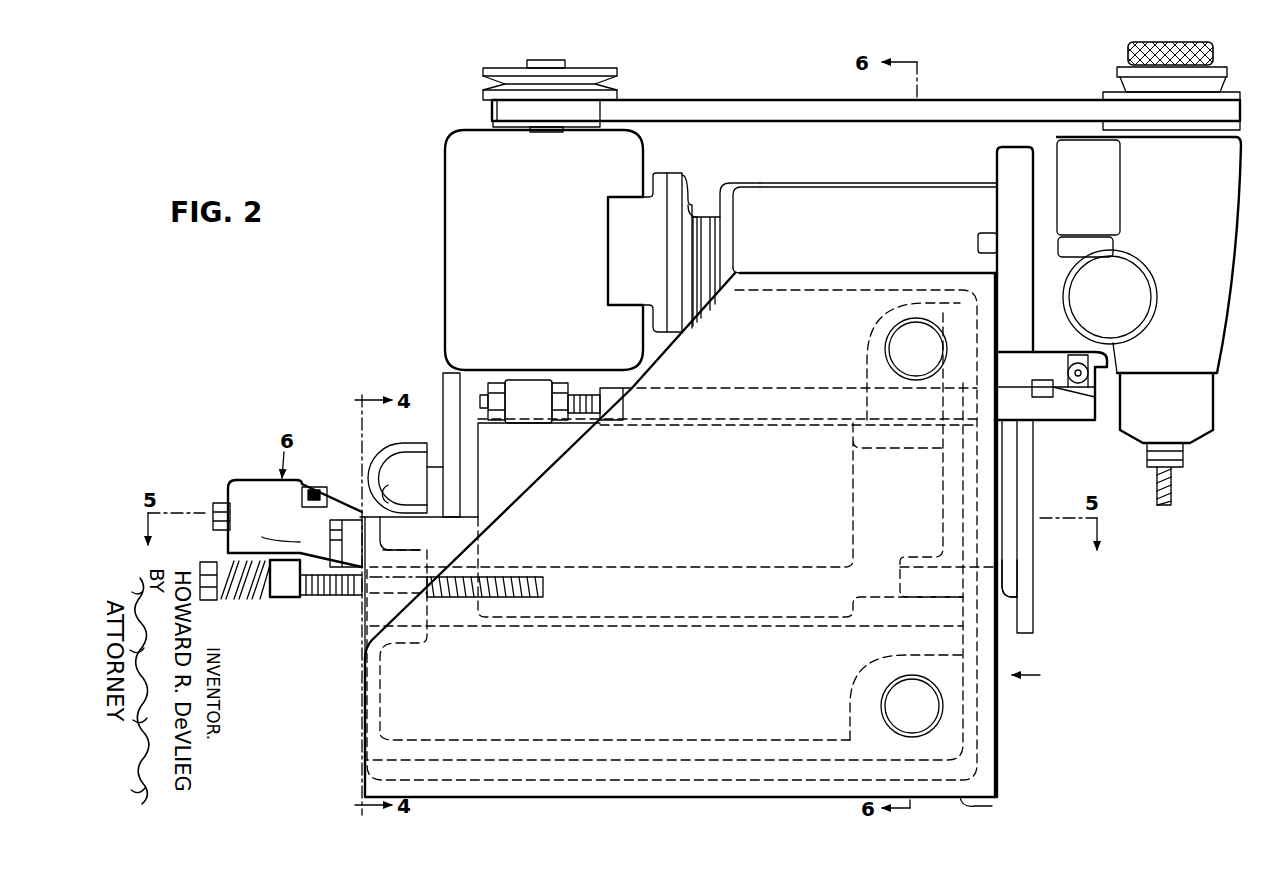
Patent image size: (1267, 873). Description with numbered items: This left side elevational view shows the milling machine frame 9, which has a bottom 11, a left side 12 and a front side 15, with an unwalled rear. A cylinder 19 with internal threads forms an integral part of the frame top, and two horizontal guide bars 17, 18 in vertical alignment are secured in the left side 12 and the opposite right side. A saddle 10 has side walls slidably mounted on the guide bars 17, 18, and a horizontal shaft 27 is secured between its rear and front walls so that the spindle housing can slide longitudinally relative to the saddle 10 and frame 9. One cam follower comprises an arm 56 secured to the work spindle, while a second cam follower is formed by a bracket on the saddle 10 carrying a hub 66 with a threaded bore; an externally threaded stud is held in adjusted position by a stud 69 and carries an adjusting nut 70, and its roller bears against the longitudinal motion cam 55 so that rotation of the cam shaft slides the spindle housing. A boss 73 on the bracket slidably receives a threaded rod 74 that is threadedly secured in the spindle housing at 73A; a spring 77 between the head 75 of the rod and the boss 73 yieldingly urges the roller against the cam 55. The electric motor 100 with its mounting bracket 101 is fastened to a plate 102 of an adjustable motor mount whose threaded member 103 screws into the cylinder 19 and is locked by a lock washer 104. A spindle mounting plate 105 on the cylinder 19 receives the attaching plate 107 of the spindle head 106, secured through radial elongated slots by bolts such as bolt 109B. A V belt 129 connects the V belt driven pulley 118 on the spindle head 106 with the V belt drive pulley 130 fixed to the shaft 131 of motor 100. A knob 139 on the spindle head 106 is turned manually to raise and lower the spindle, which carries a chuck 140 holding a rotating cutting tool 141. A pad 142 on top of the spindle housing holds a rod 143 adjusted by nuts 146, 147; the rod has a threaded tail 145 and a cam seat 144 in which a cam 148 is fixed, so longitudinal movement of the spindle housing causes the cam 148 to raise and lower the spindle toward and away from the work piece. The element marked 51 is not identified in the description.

The frame 9 is at (1036, 674).
The saddle 10 is at (356, 680).
The bottom 11 is at (985, 802).
The left side 12 is at (680, 723).
The front side 15 is at (998, 722).
The horizontal guide bar 17 is at (900, 705).
The horizontal guide bar 18 is at (903, 355).
The cylinder 19 is at (866, 186).
The horizontal shaft 27 is at (730, 572).
The column bar 51 is at (1028, 602).
The longitudinal motion cam 55 is at (393, 446).
The arm 56 is at (448, 394).
The hub 66 is at (238, 480).
The stud 69 is at (218, 505).
The adjusting nut 70 is at (316, 488).
The boss 73 is at (296, 595).
The threaded connection 73A is at (517, 576).
The threaded rod 74 is at (350, 597).
The head 75 is at (222, 601).
The spring 77 is at (268, 601).
The electric motor 100 is at (552, 171).
The mounting bracket 101 is at (658, 173).
The plate 102 is at (688, 176).
The threaded member 103 is at (703, 215).
The lock washer 104 is at (737, 186).
The spindle mounting plate 105 is at (1004, 162).
The spindle head 106 is at (1170, 177).
The attaching plate 107 is at (1053, 193).
The bolt 109B is at (976, 243).
The V belt driven pulley 118 is at (1220, 78).
The V belt 129 is at (1045, 100).
The V belt drive pulley 130 is at (595, 70).
The shaft 131 is at (546, 60).
The knob 139 is at (1093, 286).
The chuck 140 is at (1185, 455).
The rotating cutting tool 141 is at (1173, 490).
The pad 142 is at (513, 409).
The rod 143 is at (1056, 421).
The cam seat 144 is at (1093, 400).
The threaded tail 145 is at (588, 390).
The nut 146 is at (560, 382).
The nut 147 is at (493, 384).
The cam 148 is at (1050, 383).